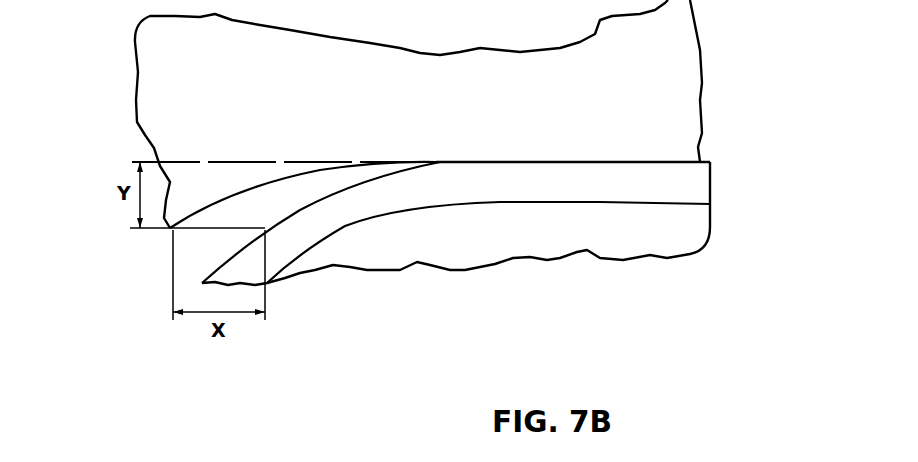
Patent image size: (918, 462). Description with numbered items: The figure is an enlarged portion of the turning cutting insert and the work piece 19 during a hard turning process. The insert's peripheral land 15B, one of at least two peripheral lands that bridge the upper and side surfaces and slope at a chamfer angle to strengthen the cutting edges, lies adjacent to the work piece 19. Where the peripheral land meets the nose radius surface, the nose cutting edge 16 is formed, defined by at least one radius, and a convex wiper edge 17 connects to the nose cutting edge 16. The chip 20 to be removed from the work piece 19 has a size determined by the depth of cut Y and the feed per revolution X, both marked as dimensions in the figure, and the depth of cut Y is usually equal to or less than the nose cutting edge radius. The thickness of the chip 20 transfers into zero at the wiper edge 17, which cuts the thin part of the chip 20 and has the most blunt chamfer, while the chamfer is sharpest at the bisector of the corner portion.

The work piece 19 is at (180, 92).
The peripheral land 15B is at (683, 182).
The first wiper edge 17 is at (500, 163).
The chip 20 is at (273, 195).
The nose cutting edge 16 is at (327, 195).